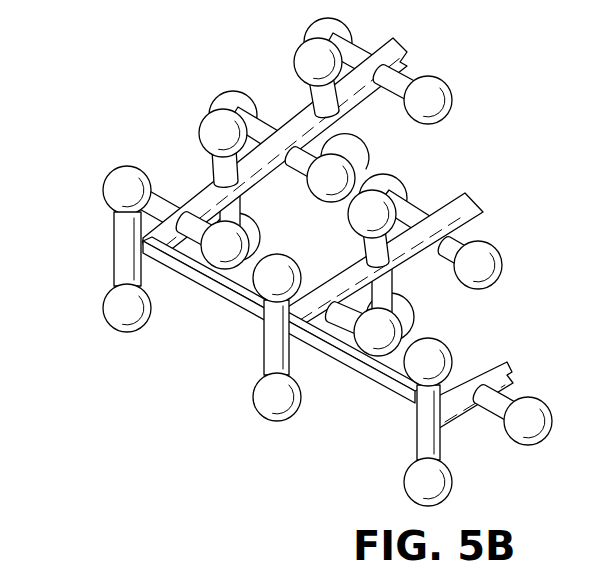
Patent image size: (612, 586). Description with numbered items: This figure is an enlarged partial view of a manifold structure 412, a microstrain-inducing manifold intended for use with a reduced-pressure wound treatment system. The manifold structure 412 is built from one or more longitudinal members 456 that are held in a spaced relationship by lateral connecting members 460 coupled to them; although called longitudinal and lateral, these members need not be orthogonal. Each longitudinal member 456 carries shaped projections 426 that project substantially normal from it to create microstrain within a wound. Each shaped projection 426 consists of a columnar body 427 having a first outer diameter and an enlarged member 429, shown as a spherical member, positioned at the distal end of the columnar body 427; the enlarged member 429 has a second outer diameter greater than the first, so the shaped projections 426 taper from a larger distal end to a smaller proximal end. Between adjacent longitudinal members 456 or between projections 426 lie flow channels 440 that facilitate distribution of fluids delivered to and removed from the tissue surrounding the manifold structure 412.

The manifold structure 412 is at (119, 166).
The shaped projection 426 is at (434, 78).
The columnar body 427 is at (114, 242).
The enlarged member 429 is at (295, 60).
The flow channel 440 is at (296, 262).
The longitudinal member 456 is at (291, 117).
The lateral connecting member 460 is at (219, 294).